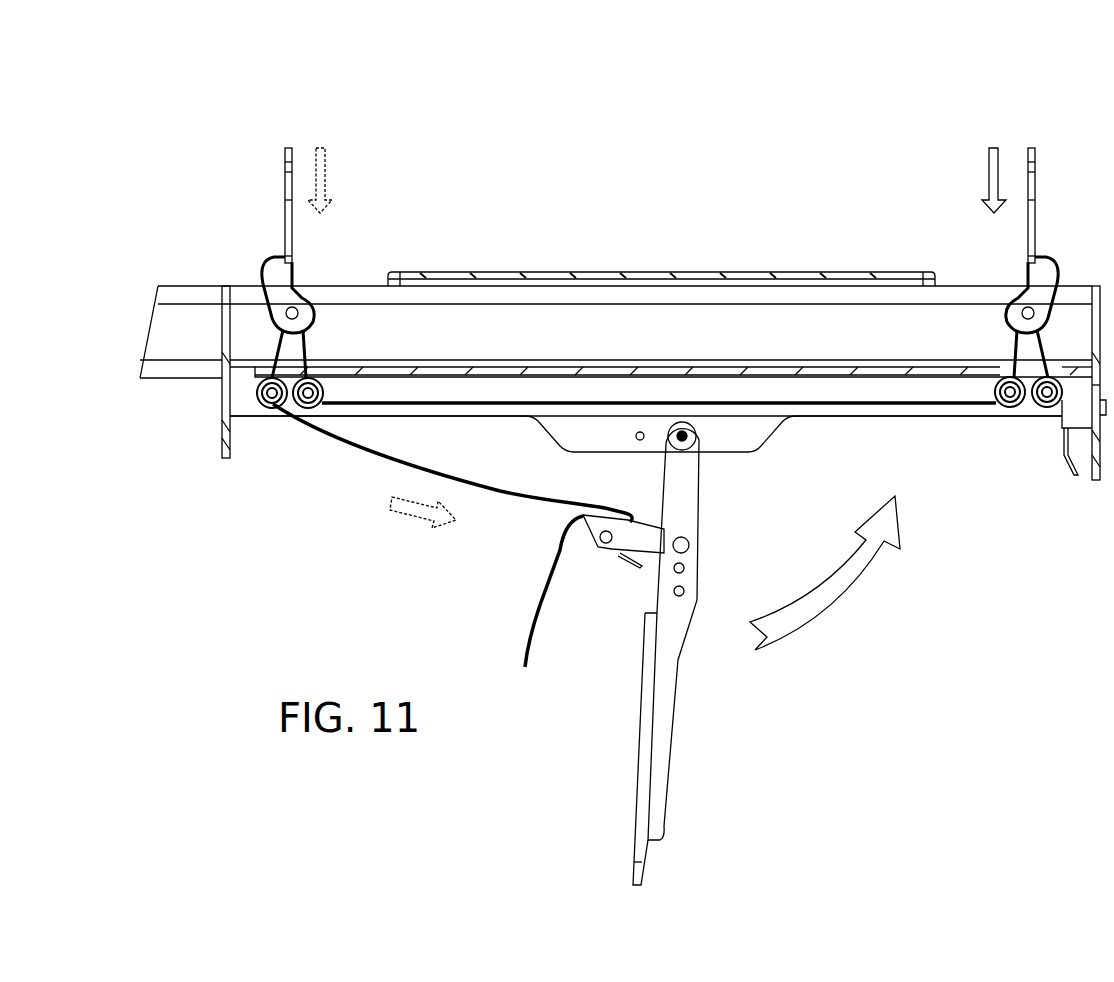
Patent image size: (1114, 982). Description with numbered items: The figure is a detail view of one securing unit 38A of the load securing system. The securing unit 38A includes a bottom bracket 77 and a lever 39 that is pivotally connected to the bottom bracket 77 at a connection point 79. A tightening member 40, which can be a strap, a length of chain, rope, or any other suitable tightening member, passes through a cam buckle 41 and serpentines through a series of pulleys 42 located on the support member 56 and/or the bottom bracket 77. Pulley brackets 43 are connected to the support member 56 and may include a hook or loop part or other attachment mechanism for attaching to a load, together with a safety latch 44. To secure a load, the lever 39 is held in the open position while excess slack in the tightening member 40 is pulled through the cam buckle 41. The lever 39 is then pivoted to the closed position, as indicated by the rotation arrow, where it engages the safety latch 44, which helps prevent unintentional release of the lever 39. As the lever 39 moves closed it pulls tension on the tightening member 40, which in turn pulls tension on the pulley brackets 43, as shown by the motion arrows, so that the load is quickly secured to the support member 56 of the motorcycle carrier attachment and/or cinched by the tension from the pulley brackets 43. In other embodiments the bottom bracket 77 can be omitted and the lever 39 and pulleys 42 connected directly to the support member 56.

The securing unit 38A is at (860, 143).
The support member 56 is at (688, 320).
The bottom bracket 77 is at (745, 430).
The pulley brackets 43 is at (227, 233).
The pulleys 42 is at (622, 467).
The safety latch 44 is at (1082, 506).
The tightening member 40 is at (452, 535).
The cam buckle 41 is at (595, 608).
The connection point 79 is at (700, 455).
The lever 39 is at (766, 657).